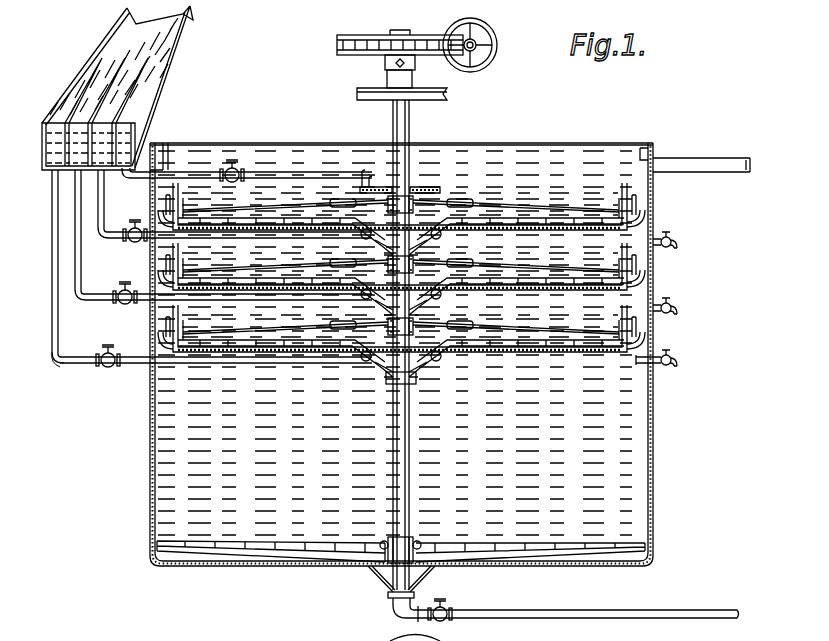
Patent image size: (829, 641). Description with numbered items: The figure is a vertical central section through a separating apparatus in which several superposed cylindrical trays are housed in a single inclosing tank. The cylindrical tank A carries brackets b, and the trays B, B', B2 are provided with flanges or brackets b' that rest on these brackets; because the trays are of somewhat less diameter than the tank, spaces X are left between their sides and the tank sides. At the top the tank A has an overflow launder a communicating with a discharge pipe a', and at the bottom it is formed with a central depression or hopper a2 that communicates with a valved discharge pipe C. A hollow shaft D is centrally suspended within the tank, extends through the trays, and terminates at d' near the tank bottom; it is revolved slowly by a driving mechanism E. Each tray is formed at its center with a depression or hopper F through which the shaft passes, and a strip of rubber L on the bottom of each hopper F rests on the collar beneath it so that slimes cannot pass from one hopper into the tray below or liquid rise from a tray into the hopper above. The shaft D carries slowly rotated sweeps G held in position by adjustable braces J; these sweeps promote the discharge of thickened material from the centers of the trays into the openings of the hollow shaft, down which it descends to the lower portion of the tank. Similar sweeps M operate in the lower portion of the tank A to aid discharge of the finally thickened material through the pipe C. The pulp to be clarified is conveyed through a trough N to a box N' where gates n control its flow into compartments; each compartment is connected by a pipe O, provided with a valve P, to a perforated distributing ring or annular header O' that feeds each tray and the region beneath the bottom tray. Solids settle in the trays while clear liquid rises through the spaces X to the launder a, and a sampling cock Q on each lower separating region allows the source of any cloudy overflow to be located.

The cylindrical tank A is at (655, 446).
The overflow launder a is at (658, 138).
The discharge pipe a' is at (701, 149).
The depression or hopper a2 is at (392, 596).
The tray B is at (400, 181).
The tray B' is at (400, 274).
The tray B2 is at (400, 336).
The brackets b is at (672, 350).
The flanges or brackets b' is at (681, 312).
The valved discharge pipe C is at (640, 608).
The hollow shaft D is at (411, 130).
The discharge point of hollow shaft d' is at (381, 582).
The driving mechanism E is at (350, 55).
The depression or hopper F is at (378, 366).
The sweeps G is at (272, 215).
The adjustable braces J is at (470, 264).
The strip of rubber L is at (418, 380).
The sweeps M is at (270, 552).
The trough N is at (117, 85).
The box N' is at (77, 126).
The gates n is at (150, 76).
The pipe O is at (212, 236).
The perforated distributing ring or annular header O' is at (443, 151).
The valve P is at (240, 170).
The sampling cock Q is at (678, 238).
The spaces X is at (634, 298).